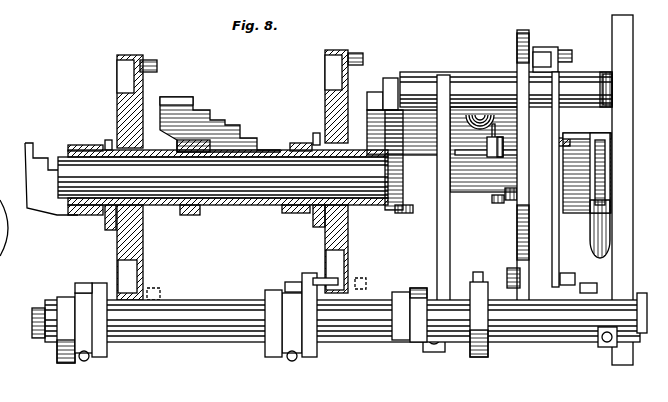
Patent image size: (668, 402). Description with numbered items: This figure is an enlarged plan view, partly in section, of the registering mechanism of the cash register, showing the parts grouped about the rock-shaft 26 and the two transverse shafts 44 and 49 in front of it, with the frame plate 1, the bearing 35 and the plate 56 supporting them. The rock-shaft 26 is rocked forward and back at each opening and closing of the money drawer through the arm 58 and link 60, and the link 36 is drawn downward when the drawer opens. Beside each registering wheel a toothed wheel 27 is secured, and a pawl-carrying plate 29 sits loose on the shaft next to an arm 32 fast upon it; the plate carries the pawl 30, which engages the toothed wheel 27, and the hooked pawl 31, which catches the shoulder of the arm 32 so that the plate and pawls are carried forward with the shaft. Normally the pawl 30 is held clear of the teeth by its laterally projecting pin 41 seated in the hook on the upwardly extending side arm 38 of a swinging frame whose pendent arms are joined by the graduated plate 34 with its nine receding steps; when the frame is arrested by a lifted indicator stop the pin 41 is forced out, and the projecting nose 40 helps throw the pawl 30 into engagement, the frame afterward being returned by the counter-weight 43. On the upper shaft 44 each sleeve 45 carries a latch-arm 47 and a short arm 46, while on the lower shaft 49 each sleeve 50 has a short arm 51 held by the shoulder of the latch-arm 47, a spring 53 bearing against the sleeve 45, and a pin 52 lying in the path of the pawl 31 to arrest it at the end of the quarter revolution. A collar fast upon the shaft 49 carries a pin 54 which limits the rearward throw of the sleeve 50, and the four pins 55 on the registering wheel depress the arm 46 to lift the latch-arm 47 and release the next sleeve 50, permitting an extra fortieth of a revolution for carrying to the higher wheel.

The frame plate 1 is at (622, 240).
The rock-shaft 26 is at (238, 178).
The toothed wheel 27 is at (125, 90).
The pawl-carrying plate 29 is at (104, 147).
The pawl 30 is at (528, 145).
The pawl 31 is at (524, 208).
The arm 32 is at (106, 221).
The graduated plate 34 is at (182, 104).
The bearing 35 is at (612, 83).
The link 36 is at (466, 85).
The side arm 38 is at (200, 140).
The projecting nose 40 is at (487, 149).
The laterally projecting pin 41 is at (493, 140).
The counter-weight 43 is at (478, 110).
The shaft 44 is at (398, 300).
The sleeve 45 is at (413, 288).
The short arm 46 is at (574, 282).
The latch-arm 47 is at (482, 295).
The rock-shaft 49 is at (33, 327).
The sleeve 50 is at (176, 335).
The short arm 51 is at (58, 354).
The pin 52 is at (310, 278).
The spring 53 is at (265, 296).
The pin 54 is at (290, 282).
The pin 55 is at (146, 63).
The plate 56 is at (438, 208).
The arm 58 is at (587, 173).
The link 60 is at (598, 218).